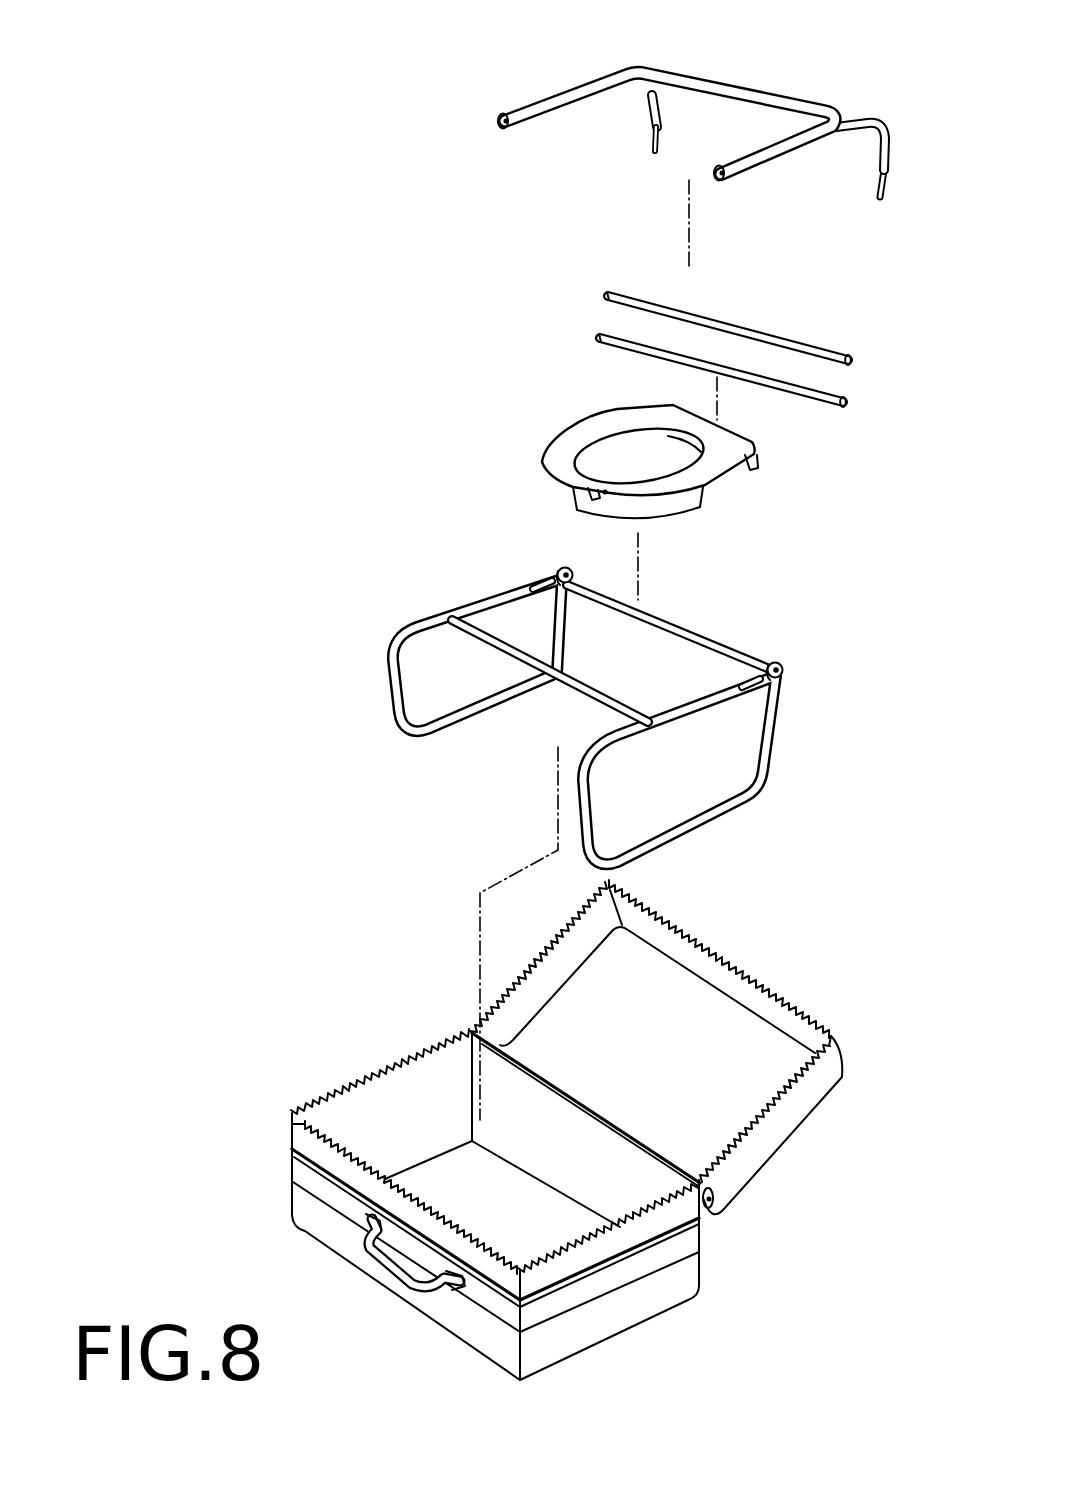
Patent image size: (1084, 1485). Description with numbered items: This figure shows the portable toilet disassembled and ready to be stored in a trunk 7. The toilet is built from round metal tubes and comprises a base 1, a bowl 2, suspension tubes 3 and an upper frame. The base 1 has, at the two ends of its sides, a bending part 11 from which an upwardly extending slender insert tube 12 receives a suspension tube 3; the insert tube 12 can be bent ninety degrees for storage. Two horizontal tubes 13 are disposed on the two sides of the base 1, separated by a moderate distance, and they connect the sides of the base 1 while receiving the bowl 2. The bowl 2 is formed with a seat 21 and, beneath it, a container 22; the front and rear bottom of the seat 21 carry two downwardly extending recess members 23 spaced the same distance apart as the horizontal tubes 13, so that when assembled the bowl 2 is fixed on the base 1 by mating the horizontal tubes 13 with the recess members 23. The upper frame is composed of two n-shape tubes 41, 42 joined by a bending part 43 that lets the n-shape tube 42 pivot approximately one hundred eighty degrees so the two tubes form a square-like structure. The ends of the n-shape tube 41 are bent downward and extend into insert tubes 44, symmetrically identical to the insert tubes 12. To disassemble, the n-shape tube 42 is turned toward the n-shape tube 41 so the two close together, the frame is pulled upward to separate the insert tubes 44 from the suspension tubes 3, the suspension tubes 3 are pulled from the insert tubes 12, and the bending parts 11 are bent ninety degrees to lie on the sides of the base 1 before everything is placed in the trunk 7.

The base 1 is at (611, 684).
The bowl 2 is at (670, 448).
The suspension tubes 3 is at (815, 350).
The trunk 7 is at (710, 1222).
The bending part 11 is at (571, 574).
The insert tube 12 is at (540, 580).
The horizontal tubes 13 is at (687, 632).
The seat 21 is at (730, 464).
The container 22 is at (673, 503).
The recess members 23 is at (765, 462).
The n-shape tube 41 is at (810, 150).
The n-shape tube 42 is at (725, 92).
The bending part 43 is at (501, 130).
The insert tubes 44 is at (654, 148).